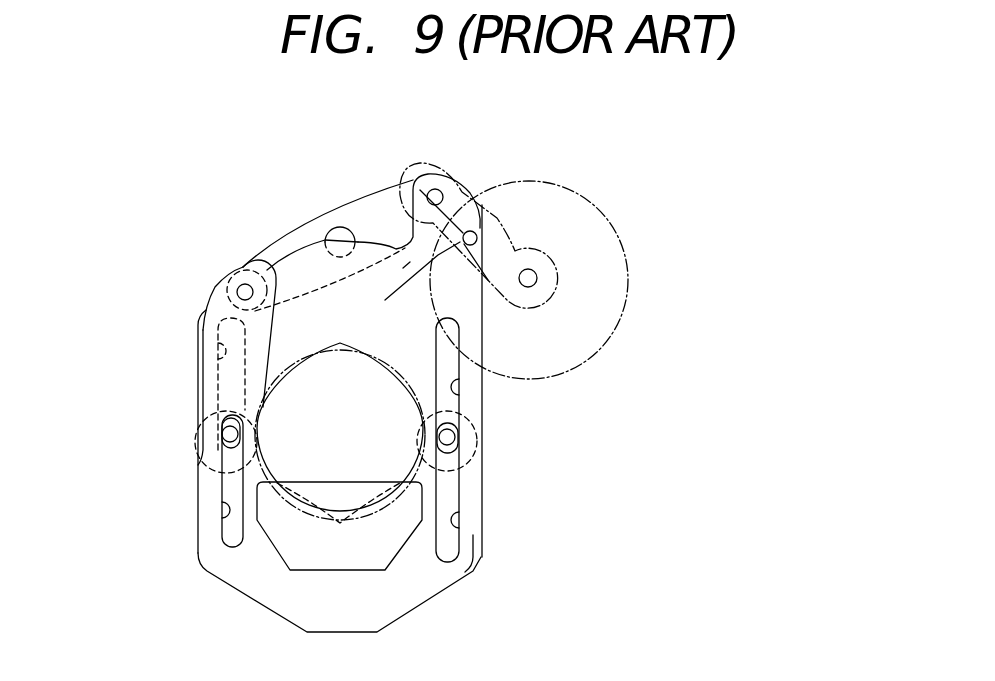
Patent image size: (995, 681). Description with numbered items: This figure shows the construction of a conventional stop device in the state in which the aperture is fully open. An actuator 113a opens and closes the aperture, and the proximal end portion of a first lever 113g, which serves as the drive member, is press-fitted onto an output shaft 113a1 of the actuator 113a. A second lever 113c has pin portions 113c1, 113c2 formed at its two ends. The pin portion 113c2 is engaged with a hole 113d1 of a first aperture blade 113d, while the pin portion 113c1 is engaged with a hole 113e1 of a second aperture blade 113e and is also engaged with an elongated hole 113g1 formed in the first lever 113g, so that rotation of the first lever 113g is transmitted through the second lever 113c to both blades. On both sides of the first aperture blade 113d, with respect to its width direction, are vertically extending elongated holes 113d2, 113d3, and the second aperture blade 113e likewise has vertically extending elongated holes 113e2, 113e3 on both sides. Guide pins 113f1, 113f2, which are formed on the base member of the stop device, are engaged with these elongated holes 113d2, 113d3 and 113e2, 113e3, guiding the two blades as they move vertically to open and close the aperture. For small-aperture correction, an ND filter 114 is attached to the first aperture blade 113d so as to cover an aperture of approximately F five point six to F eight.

The actuator 113a is at (603, 210).
The output shaft 113a1 is at (537, 279).
The first lever 113g is at (530, 205).
The elongated hole 113g1 is at (400, 272).
The second lever 113c is at (350, 210).
The pin portion 113c1 is at (443, 176).
The pin portion 113c2 is at (243, 287).
The first aperture blade 113d is at (245, 577).
The hole 113d1 is at (228, 292).
The elongated hole 113d2 is at (463, 537).
The elongated hole 113d3 is at (228, 518).
The second aperture blade 113e is at (430, 371).
The hole 113e1 is at (473, 193).
The elongated hole 113e2 is at (448, 397).
The elongated hole 113e3 is at (228, 356).
The guide pin 113f1 is at (450, 440).
The guide pin 113f2 is at (228, 435).
The ND filter 114 is at (305, 555).